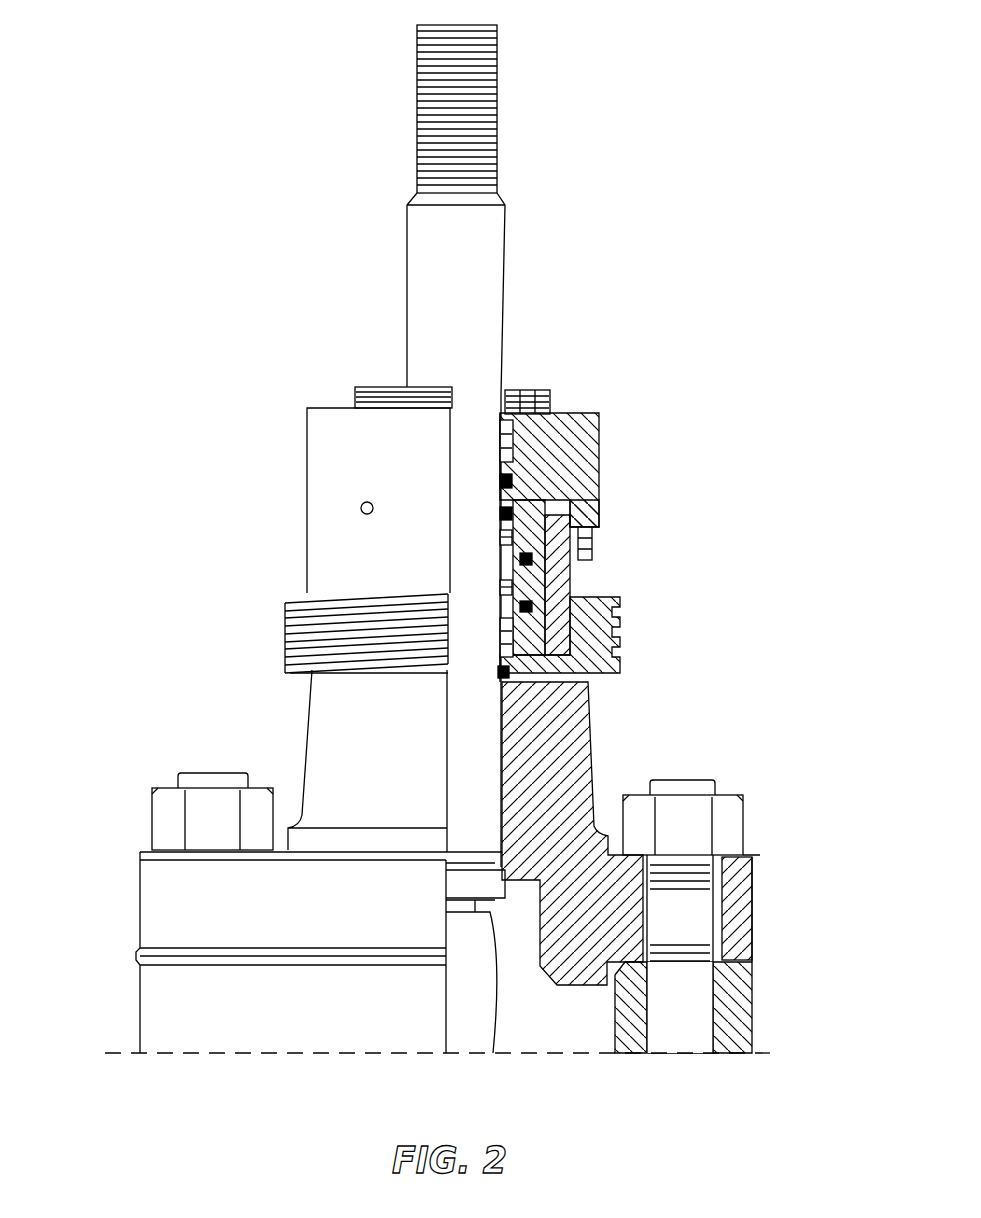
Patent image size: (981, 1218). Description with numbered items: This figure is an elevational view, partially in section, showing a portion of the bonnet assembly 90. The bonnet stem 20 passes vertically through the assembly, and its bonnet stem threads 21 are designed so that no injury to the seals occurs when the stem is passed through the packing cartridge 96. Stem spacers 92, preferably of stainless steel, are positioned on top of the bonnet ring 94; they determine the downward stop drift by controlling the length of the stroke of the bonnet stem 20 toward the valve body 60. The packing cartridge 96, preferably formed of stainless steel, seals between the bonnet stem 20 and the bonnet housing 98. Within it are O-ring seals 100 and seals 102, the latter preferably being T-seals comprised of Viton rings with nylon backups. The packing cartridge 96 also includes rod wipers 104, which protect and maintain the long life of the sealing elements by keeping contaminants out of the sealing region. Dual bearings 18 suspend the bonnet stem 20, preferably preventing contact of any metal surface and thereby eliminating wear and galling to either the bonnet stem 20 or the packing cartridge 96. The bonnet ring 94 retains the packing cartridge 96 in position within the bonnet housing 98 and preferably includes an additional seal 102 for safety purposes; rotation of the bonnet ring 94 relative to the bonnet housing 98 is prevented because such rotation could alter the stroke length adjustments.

The bonnet assembly 90 is at (287, 116).
The bonnet stem threads 21 is at (497, 71).
The bonnet stem 20 is at (494, 241).
The stem spacers 92 is at (540, 395).
The bonnet ring 94 is at (580, 413).
The dual bearings 18 is at (518, 442).
The rod wipers 104 is at (552, 500).
The seals 102 is at (500, 583).
The O-ring seals 100 is at (532, 603).
The packing cartridge 96 is at (515, 680).
The bonnet housing 98 is at (591, 770).
The valve body 60 is at (150, 985).